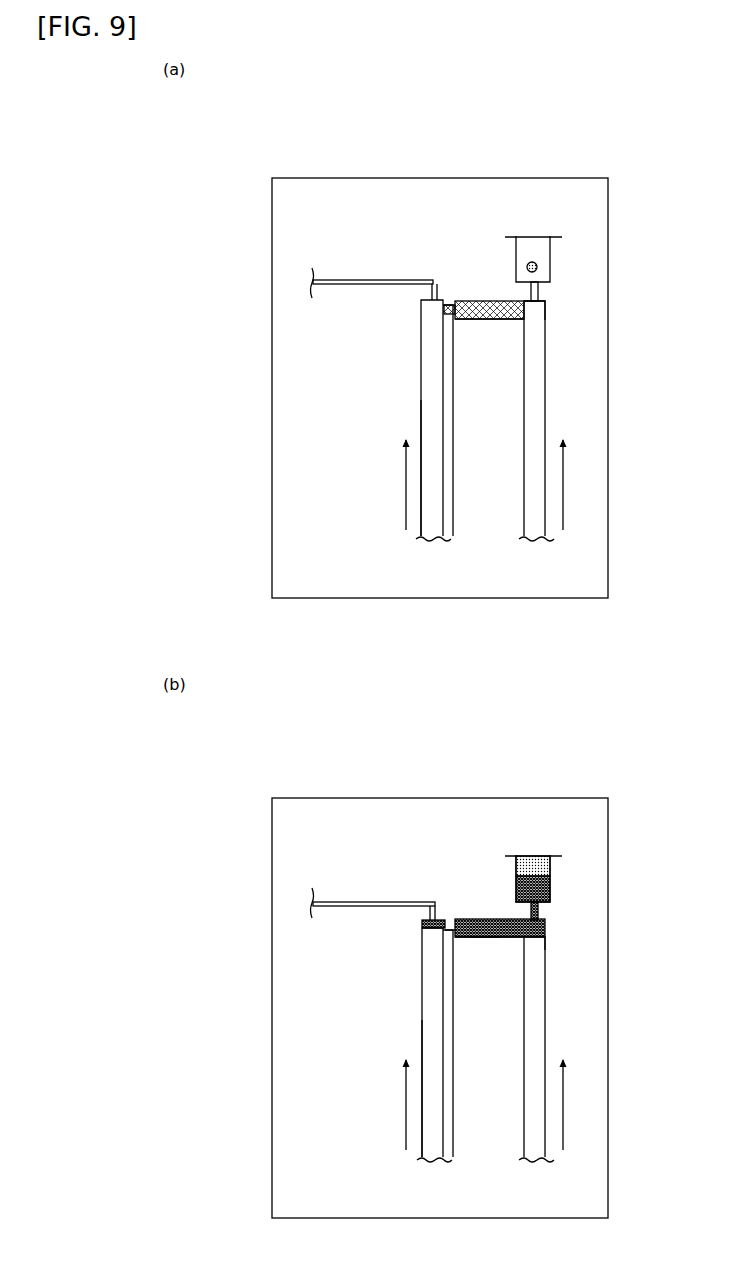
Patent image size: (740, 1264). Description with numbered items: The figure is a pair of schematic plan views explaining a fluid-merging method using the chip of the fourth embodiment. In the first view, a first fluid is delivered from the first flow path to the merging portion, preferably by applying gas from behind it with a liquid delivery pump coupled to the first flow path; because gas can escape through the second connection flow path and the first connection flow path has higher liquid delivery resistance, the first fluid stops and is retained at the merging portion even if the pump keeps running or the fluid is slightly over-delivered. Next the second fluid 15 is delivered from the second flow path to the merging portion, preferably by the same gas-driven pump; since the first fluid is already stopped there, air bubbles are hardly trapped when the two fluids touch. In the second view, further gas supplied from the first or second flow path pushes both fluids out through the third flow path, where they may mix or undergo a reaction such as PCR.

The second fluid 15 is at (422, 924).